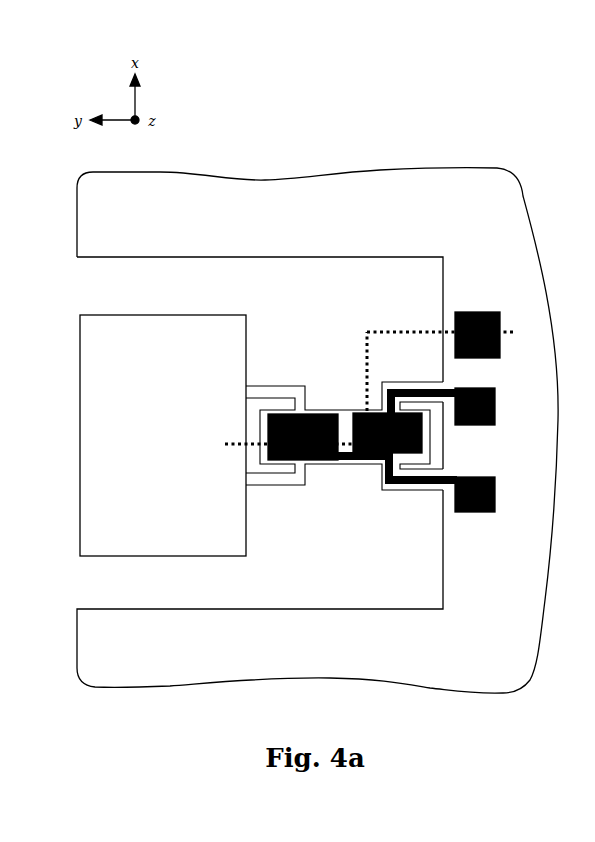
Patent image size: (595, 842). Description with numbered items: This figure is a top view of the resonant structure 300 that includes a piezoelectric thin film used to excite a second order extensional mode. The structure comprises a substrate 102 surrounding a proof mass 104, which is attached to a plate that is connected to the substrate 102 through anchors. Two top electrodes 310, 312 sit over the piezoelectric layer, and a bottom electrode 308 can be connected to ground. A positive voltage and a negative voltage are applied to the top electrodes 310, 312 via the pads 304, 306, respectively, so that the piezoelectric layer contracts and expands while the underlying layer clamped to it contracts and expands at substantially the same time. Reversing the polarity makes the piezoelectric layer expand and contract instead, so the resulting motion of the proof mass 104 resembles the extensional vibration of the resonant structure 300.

The sensor device 300 is at (488, 105).
The substrate 102 is at (236, 197).
The proof mass 104 is at (95, 377).
The pad 304 is at (497, 399).
The pad 306 is at (497, 489).
The bottom electrode 308 is at (500, 316).
The top electrode 310 is at (303, 437).
The top electrode 312 is at (387, 433).